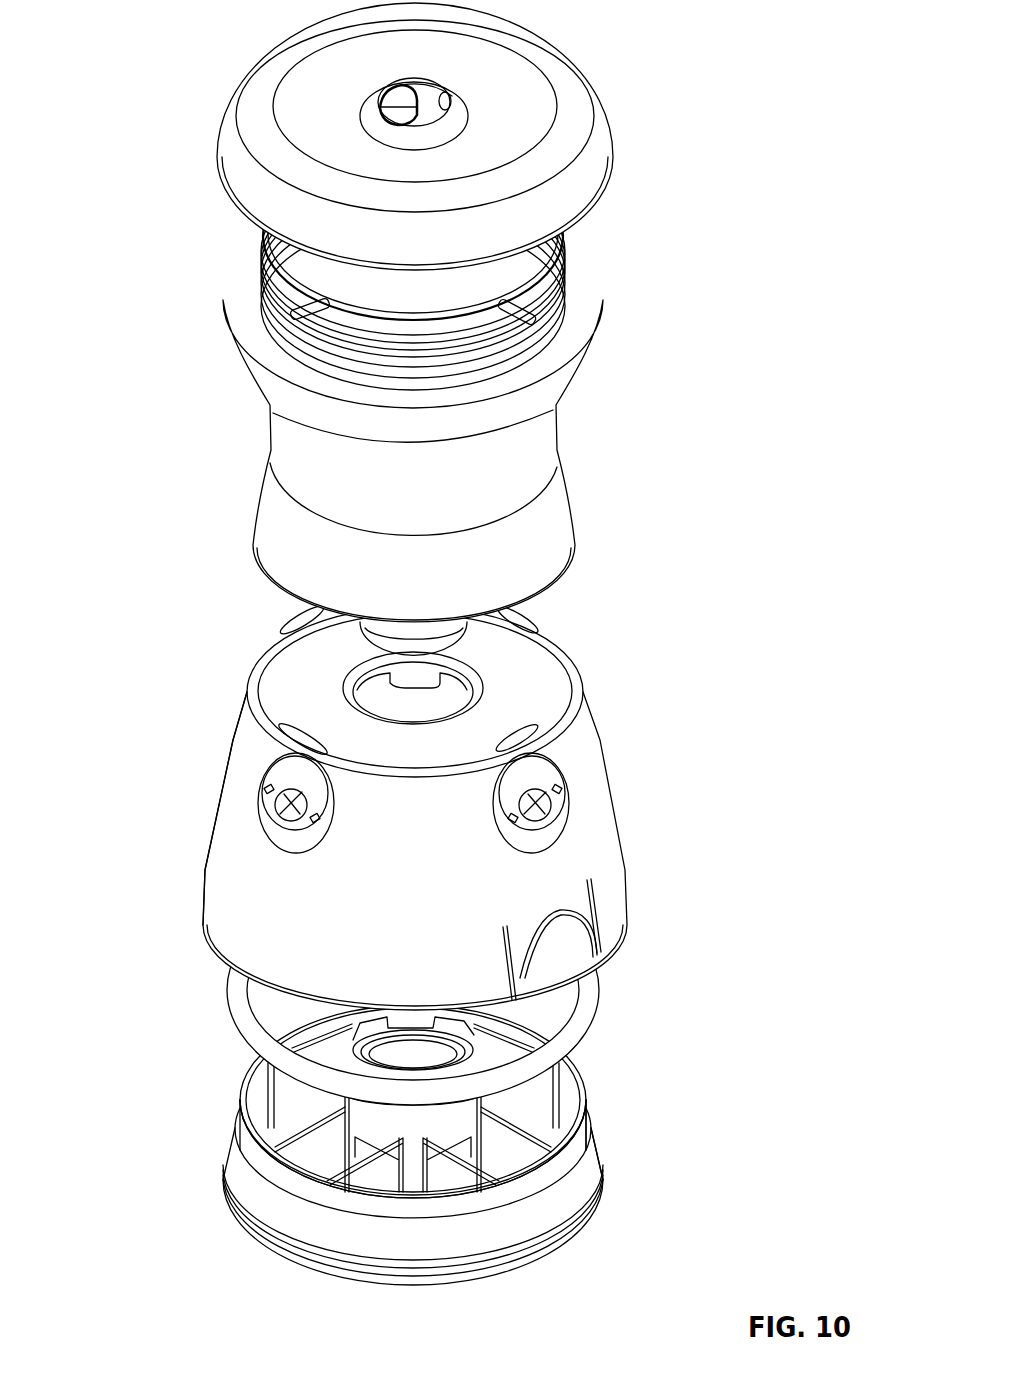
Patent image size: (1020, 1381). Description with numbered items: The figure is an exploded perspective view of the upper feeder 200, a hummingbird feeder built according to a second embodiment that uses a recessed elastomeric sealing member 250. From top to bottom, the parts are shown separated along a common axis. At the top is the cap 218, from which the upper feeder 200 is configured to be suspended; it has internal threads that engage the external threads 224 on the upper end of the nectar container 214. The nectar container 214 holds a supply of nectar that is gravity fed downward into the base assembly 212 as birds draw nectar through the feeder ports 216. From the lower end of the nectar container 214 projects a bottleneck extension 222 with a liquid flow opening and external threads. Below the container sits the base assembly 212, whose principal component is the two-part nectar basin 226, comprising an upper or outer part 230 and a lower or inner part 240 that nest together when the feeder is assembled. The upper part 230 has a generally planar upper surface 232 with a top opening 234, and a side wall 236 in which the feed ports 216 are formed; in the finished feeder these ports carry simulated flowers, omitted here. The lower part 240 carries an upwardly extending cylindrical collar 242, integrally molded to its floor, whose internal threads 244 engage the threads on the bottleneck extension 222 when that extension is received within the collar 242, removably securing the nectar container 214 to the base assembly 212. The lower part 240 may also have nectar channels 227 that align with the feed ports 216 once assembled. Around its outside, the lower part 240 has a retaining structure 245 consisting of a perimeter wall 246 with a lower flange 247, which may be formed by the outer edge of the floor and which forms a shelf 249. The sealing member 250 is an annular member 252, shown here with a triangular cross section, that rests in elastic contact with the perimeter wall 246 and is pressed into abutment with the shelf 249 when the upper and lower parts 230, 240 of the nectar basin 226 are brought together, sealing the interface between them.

The upper feeder 200 is at (714, 35).
The base assembly 212 is at (741, 863).
The nectar container 214 is at (563, 423).
The feeder ports 216 is at (553, 790).
The cap 218 is at (540, 50).
The bottleneck extension 222 is at (482, 630).
The external threads 224 is at (573, 262).
The nectar basin 226 is at (159, 1098).
The nectar channels 227 is at (268, 1185).
The upper part of the nectar basin 230 is at (631, 842).
The upper surface 232 is at (550, 662).
The top opening 234 is at (373, 697).
The side wall 236 is at (243, 867).
The lower part of the nectar basin 240 is at (606, 1101).
The collar 242 is at (353, 1100).
The internal threads 244 is at (500, 1013).
The retaining structure 245 is at (621, 1175).
The perimeter wall 246 is at (537, 1217).
The lower flange 247 is at (300, 1155).
The shelf 249 is at (600, 1160).
The recessed elastomeric sealing member 250 is at (621, 999).
The annular member 252 is at (237, 1003).